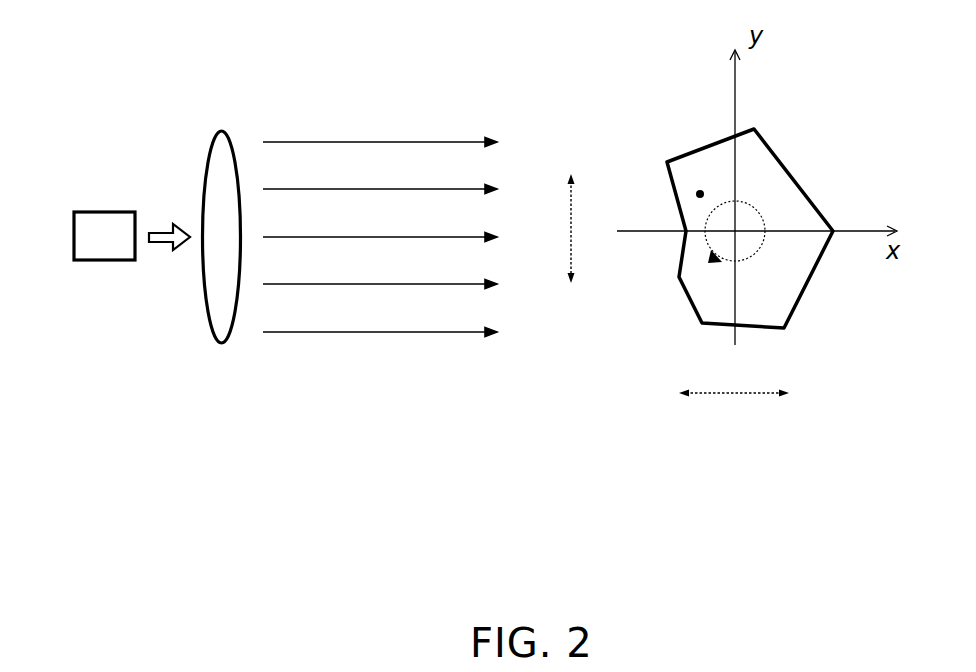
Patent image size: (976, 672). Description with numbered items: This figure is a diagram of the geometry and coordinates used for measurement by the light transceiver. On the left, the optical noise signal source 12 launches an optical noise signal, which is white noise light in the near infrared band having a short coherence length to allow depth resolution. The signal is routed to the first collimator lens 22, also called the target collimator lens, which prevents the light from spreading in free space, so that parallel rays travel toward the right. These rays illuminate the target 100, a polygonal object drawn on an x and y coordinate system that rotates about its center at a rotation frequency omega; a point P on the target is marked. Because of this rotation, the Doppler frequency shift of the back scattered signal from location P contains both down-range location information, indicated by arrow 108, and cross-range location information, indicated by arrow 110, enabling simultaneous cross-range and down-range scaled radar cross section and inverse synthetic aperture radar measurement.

The optical noise signal source 12 is at (106, 212).
The first collimator lens 22 is at (221, 130).
The arrow indicating cross-range location information 110 is at (568, 207).
The target 100 is at (792, 167).
The arrow indicating down-range location information 108 is at (740, 393).